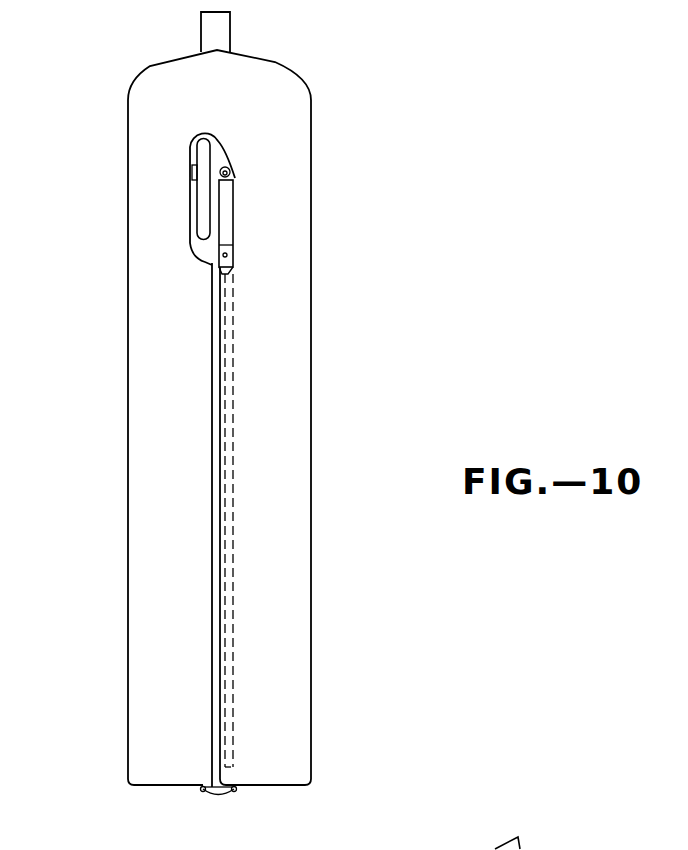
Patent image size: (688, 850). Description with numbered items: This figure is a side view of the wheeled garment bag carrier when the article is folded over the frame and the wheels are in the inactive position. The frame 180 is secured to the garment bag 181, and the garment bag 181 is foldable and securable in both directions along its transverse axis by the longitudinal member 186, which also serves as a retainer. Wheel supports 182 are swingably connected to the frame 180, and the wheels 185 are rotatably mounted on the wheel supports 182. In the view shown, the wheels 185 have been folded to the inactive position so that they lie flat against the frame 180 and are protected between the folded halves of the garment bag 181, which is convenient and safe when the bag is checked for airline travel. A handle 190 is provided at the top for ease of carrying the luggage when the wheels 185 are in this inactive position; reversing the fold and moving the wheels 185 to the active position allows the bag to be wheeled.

The frame 180 is at (233, 678).
The garment bag 181 is at (298, 143).
The wheel supports 182 is at (230, 208).
The wheels 185 is at (203, 217).
The longitudinal member 186 is at (228, 797).
The handle 190 is at (223, 22).